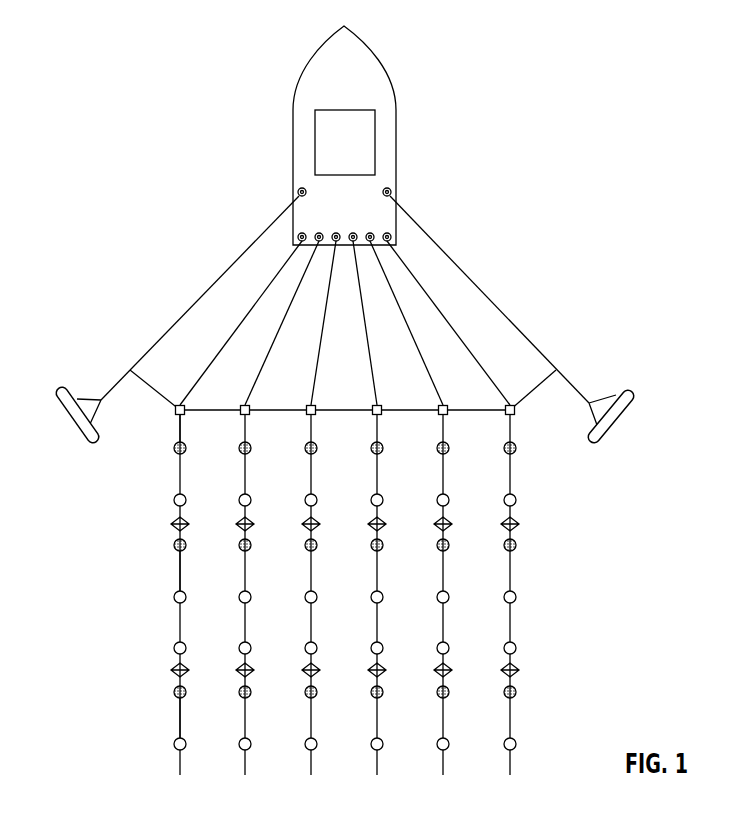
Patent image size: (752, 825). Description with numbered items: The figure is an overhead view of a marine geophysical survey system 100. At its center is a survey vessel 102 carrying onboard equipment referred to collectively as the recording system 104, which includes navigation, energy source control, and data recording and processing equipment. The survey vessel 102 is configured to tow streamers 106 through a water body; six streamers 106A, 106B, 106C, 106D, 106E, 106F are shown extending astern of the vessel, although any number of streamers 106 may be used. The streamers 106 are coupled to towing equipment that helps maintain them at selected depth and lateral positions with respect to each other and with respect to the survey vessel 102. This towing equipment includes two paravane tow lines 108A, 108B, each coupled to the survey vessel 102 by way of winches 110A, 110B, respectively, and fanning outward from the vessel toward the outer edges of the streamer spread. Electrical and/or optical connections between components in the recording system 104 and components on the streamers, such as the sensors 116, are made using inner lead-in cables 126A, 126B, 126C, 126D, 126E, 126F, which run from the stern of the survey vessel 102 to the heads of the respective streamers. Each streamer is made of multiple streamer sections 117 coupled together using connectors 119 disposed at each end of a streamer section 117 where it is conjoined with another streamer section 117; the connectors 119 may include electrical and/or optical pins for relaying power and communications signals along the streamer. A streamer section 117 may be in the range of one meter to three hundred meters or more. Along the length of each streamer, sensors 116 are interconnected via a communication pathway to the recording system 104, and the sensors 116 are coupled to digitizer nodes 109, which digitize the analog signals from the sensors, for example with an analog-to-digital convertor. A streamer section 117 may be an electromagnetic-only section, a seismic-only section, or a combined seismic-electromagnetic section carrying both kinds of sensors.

The marine geophysical survey system 100 is at (114, 29).
The survey vessel 102 is at (308, 63).
The recording system 104 is at (377, 130).
The streamers 106 is at (84, 643).
The streamer 106A is at (180, 768).
The streamer 106B is at (245, 768).
The streamer 106C is at (311, 768).
The streamer 106D is at (377, 768).
The streamer 106E is at (443, 768).
The streamer 106F is at (510, 768).
The paravane tow line 108A is at (249, 255).
The paravane tow line 108B is at (443, 252).
The digitizer node 109 is at (174, 451).
The winch 110A is at (298, 190).
The winch 110B is at (391, 190).
The sensor 116 is at (174, 499).
The streamer section 117 is at (176, 434).
The connector 119 is at (147, 524).
The inner lead-in cable 126A is at (260, 297).
The inner lead-in cable 126B is at (272, 338).
The inner lead-in cable 126C is at (305, 389).
The inner lead-in cable 126D is at (380, 389).
The inner lead-in cable 126E is at (415, 338).
The inner lead-in cable 126F is at (430, 295).